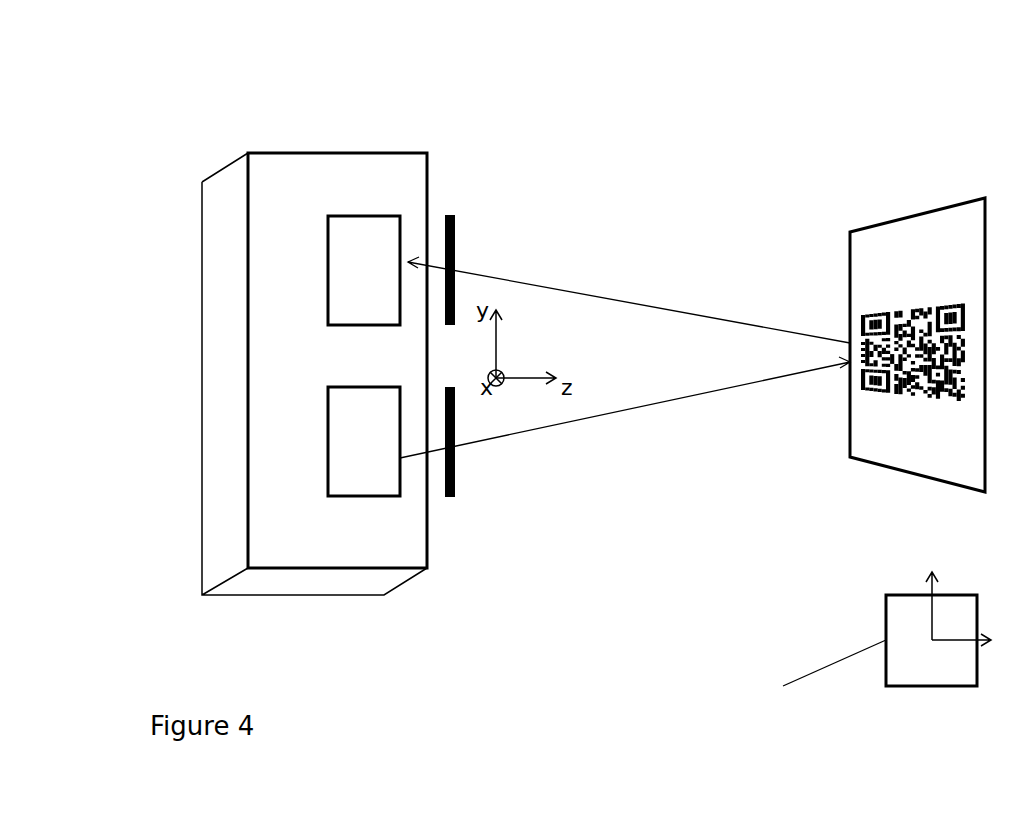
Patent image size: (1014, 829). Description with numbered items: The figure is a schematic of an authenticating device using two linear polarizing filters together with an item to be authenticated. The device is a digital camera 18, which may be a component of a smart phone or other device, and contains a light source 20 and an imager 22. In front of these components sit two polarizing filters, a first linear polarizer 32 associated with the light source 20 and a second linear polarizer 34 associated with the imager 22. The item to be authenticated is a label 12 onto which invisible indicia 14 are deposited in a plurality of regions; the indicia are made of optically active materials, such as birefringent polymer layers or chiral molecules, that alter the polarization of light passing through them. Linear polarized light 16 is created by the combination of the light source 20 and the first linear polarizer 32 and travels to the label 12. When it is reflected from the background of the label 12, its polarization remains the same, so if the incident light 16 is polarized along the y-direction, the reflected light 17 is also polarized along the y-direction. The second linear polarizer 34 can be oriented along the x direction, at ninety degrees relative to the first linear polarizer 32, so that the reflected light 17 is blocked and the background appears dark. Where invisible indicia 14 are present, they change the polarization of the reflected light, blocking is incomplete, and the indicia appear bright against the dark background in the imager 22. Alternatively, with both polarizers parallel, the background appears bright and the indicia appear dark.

The label 12 is at (905, 228).
The invisible indicia 14 is at (890, 390).
The linear polarized light 16 is at (598, 425).
The reflected light 17 is at (625, 298).
The digital camera 18 is at (427, 153).
The light source 20 is at (366, 496).
The imager 22 is at (383, 215).
The first linear polarizer 32 is at (455, 497).
The second linear polarizer 34 is at (450, 215).